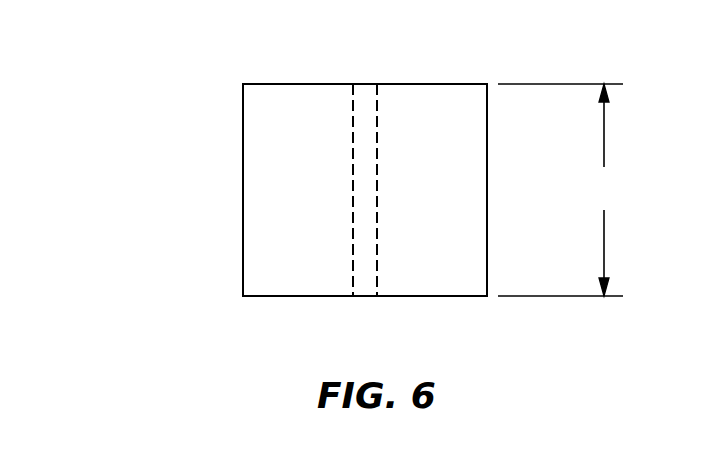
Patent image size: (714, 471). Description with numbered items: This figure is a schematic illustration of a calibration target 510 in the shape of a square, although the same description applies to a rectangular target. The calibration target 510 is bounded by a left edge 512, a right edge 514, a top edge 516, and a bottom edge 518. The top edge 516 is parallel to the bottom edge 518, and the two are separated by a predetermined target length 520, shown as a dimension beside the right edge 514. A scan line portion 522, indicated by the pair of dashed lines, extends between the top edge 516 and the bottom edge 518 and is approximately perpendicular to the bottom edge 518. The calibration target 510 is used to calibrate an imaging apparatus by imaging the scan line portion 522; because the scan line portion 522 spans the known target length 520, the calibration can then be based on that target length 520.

The calibration target 510 is at (146, 116).
The left edge 512 is at (243, 201).
The right edge 514 is at (487, 195).
The top edge 516 is at (427, 85).
The bottom edge 518 is at (318, 296).
The target length 520 is at (560, 190).
The scan line portion 522 is at (372, 88).